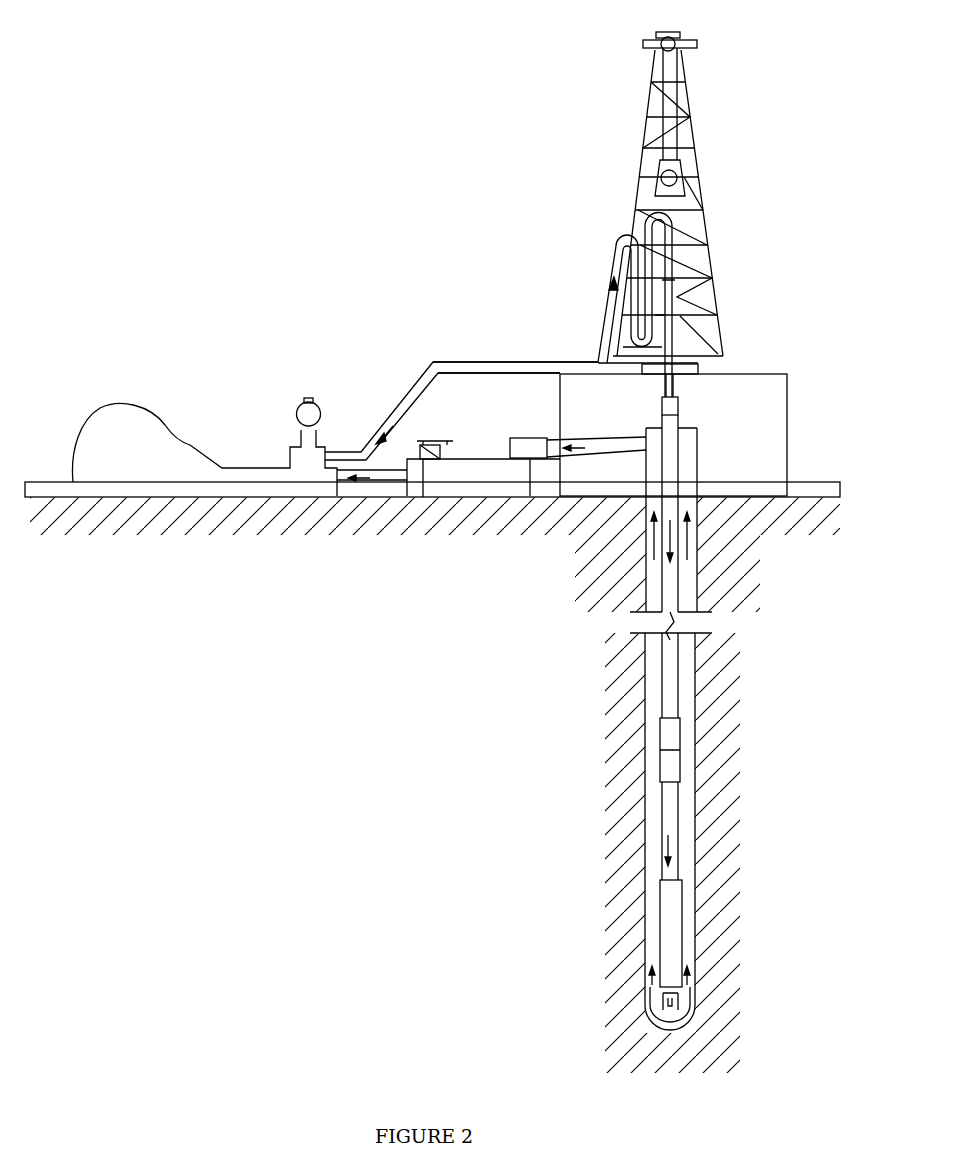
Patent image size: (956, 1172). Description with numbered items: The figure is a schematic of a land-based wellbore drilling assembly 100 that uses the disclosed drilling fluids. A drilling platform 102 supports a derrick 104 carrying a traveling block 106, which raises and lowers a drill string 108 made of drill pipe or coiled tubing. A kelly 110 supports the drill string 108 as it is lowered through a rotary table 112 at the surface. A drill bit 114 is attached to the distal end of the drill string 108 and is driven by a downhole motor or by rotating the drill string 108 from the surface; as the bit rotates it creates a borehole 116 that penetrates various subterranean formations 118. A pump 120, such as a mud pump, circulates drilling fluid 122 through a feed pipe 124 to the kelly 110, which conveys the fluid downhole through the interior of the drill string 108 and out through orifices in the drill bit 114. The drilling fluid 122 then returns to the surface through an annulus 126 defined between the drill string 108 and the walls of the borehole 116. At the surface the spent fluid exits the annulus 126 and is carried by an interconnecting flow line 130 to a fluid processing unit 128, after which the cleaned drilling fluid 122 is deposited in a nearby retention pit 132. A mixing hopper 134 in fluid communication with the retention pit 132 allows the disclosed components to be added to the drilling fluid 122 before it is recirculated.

The wellbore drilling assembly 100 is at (404, 109).
The drilling platform 102 is at (789, 380).
The derrick 104 is at (700, 125).
The traveling block 106 is at (686, 166).
The drill string 108 is at (676, 590).
The kelly 110 is at (705, 296).
The rotary table 112 is at (723, 371).
The drill bit 114 is at (700, 1000).
The borehole 116 is at (705, 682).
The subterranean formations 118 is at (543, 713).
The pump 120 is at (138, 461).
The drilling fluid 122 is at (352, 450).
The feed pipe 124 is at (450, 362).
The annulus 126 is at (690, 832).
The fluid processing unit 128 is at (528, 438).
The interconnecting flow line 130 is at (629, 453).
The retention pit 132 is at (509, 488).
The mixing hopper 134 is at (416, 499).